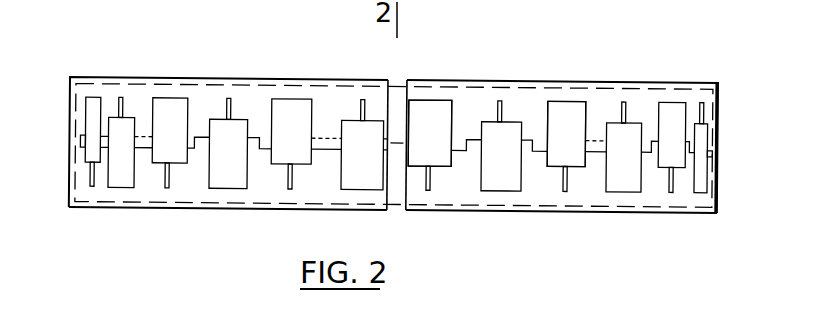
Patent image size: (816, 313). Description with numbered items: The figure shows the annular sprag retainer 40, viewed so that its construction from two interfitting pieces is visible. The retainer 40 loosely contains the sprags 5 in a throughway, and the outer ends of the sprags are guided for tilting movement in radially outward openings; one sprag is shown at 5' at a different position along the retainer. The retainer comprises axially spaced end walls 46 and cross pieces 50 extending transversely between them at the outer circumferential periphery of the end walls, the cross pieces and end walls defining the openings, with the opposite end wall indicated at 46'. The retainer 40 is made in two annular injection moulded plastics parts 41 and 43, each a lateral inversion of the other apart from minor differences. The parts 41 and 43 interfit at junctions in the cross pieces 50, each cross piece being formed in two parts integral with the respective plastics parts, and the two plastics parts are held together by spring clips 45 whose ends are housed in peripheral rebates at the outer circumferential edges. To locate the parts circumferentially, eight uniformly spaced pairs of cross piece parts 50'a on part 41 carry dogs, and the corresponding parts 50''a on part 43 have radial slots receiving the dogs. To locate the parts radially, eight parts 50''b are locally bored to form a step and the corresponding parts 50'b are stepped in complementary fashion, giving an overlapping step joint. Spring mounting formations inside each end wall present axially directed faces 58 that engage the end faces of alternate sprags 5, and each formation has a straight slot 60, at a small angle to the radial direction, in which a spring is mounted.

The sprag 5 is at (506, 98).
The electrical component (capacitor) 5' is at (495, 187).
The sprag retainer 40 is at (200, 97).
The first annular plastics part 41 is at (239, 213).
The second annular plastics part 43 is at (262, 66).
The spring clip 45 is at (388, 217).
The end wall 46 is at (567, 107).
The second housing section bottom wall 46' is at (561, 230).
The cross piece 50 is at (350, 195).
The stepped cross piece part 50'b is at (294, 200).
The locally bored cross piece part 50''b is at (326, 81).
The dogged cross piece part 50'a is at (657, 199).
The slotted cross piece part 50''a is at (660, 87).
The axially directed face 58 is at (480, 124).
The straight slot 60 is at (504, 106).